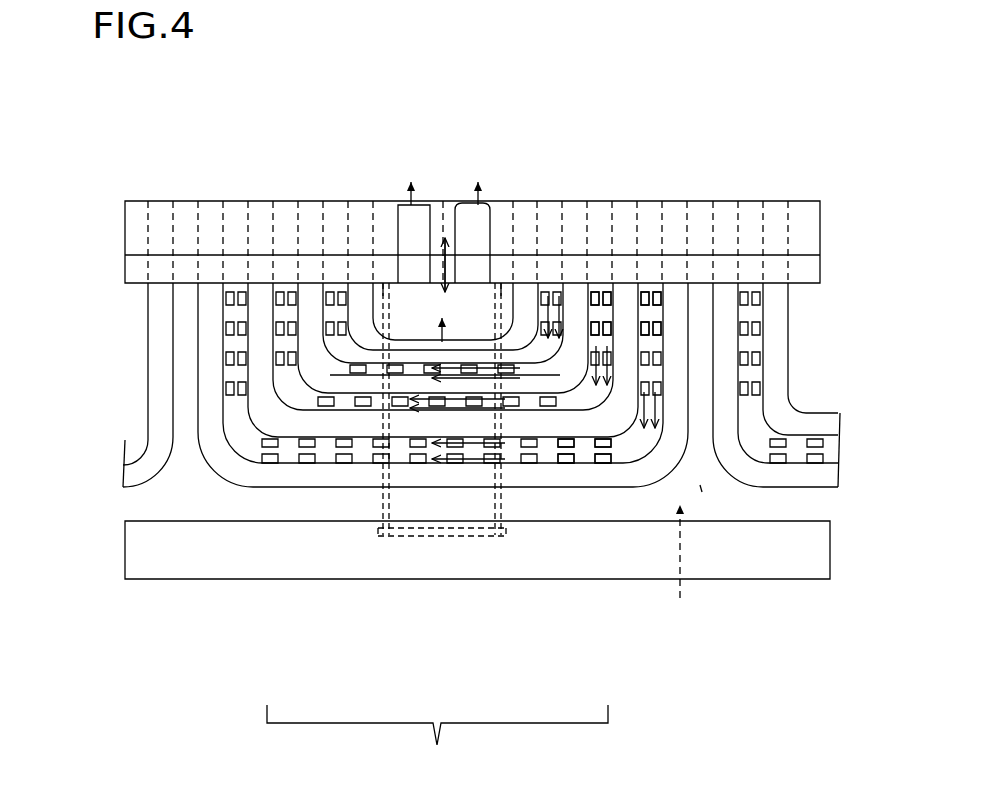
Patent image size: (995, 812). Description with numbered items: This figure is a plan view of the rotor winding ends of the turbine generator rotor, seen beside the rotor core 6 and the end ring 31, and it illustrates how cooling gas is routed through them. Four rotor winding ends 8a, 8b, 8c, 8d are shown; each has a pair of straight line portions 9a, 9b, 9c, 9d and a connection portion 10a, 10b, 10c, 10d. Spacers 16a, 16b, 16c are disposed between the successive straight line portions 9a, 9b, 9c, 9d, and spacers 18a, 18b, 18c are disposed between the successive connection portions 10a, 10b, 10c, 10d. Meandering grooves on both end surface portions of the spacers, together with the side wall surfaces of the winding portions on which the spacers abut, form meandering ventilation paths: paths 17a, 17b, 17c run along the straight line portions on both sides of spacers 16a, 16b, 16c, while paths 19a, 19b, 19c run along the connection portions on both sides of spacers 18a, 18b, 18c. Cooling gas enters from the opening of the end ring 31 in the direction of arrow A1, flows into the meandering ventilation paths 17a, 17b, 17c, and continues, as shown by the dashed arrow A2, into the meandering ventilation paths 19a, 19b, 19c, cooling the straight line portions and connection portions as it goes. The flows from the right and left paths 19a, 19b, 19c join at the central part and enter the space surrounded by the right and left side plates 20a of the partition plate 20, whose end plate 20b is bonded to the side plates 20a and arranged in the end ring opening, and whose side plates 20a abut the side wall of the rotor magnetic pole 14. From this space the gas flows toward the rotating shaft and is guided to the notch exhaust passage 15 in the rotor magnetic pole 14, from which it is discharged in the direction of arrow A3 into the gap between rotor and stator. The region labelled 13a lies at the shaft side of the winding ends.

The rotor core 6 is at (752, 215).
The rotor winding end 8a is at (88, 312).
The rotor winding end 8b is at (88, 356).
The rotor winding end 8c is at (88, 392).
The rotor winding end 8d is at (88, 430).
The straight line portion 9a is at (365, 300).
The straight line portion 9b is at (330, 345).
The straight line portion 9c is at (290, 378).
The straight line portion 9d is at (235, 410).
The connection portion 10a is at (400, 430).
The connection portion 10b is at (443, 450).
The connection portion 10c is at (465, 430).
The connection portion 10d is at (487, 480).
The channel region 13a is at (420, 260).
The rotor magnetic pole 14 is at (418, 305).
The notch exhaust passage 15 is at (467, 300).
The spacer 16a is at (550, 300).
The spacer 16b is at (603, 300).
The spacer 16c is at (650, 300).
The meandering ventilation path 17a is at (590, 300).
The meandering ventilation path 17b is at (590, 345).
The meandering ventilation path 17c is at (590, 380).
The spacer 18a is at (347, 375).
The spacer 18b is at (320, 395).
The spacer 18c is at (250, 455).
The meandering ventilation path 19a is at (565, 395).
The meandering ventilation path 19b is at (603, 420).
The meandering ventilation path 19c is at (660, 400).
The partition plate 20 is at (437, 743).
The side plate 20a is at (345, 580).
The end plate 20b is at (425, 540).
The end ring 31 is at (825, 553).
The arrow A1 is at (683, 598).
The arrow A2 is at (700, 490).
The arrow A3 is at (481, 200).